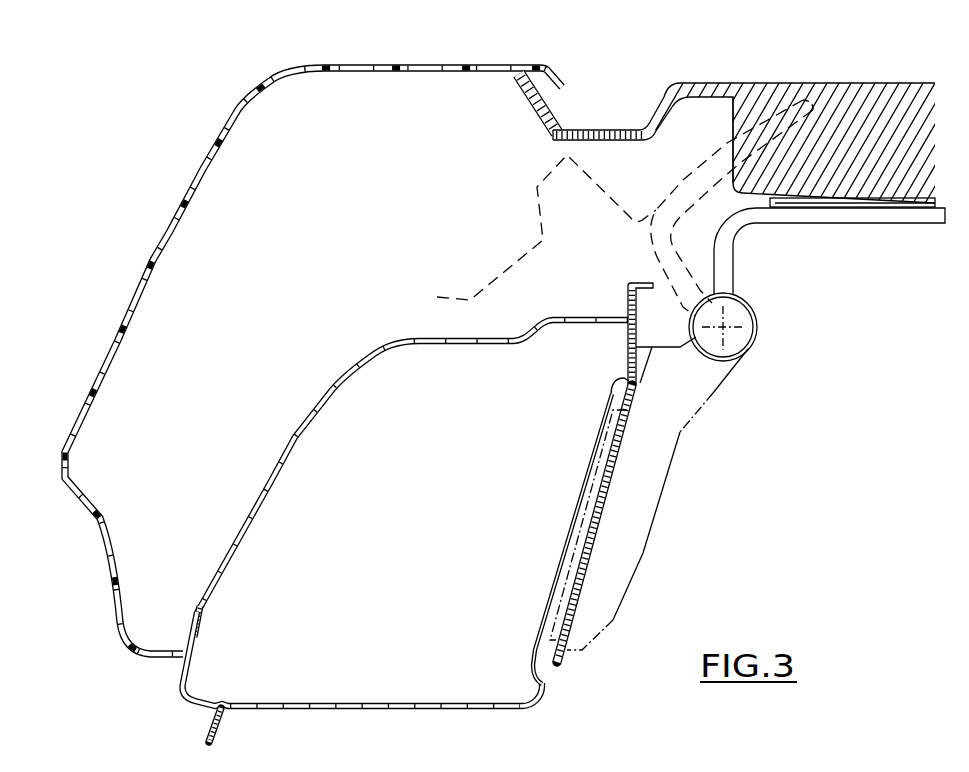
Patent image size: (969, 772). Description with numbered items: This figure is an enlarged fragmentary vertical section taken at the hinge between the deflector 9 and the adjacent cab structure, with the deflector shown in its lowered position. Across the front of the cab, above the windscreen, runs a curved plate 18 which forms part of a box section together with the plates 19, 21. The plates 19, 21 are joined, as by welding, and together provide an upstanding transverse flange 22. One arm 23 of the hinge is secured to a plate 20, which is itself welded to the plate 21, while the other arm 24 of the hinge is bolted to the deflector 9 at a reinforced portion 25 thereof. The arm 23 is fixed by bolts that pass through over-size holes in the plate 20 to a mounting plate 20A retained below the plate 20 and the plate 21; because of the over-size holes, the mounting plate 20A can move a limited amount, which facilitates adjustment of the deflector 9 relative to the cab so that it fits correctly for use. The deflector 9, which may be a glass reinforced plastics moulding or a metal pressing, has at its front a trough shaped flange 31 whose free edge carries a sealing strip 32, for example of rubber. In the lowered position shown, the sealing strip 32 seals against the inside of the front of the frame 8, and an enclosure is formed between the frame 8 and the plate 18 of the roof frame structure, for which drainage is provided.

The frame 8 is at (198, 163).
The deflector 9 is at (760, 82).
The curved plate 18 is at (270, 486).
The plate 19 is at (370, 710).
The plate 20 is at (560, 664).
The mounting plate 20A is at (600, 495).
The plate 21 is at (530, 655).
The upstanding transverse flange 22 is at (637, 304).
The arm of hinge 23 is at (663, 493).
The arm of hinge 24 is at (848, 224).
The reinforced portion 25 is at (893, 173).
The trough shaped flange 31 is at (623, 130).
The sealing strip 32 is at (528, 97).